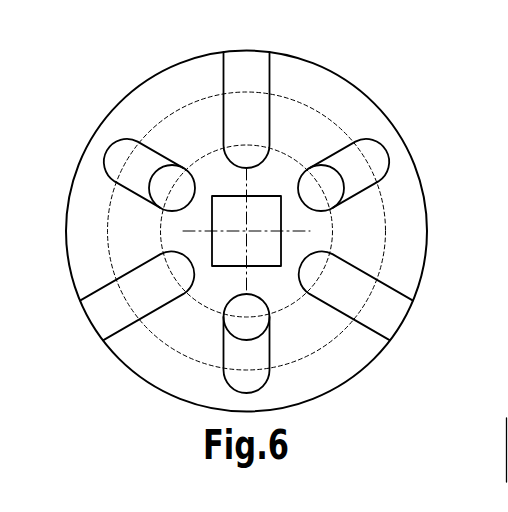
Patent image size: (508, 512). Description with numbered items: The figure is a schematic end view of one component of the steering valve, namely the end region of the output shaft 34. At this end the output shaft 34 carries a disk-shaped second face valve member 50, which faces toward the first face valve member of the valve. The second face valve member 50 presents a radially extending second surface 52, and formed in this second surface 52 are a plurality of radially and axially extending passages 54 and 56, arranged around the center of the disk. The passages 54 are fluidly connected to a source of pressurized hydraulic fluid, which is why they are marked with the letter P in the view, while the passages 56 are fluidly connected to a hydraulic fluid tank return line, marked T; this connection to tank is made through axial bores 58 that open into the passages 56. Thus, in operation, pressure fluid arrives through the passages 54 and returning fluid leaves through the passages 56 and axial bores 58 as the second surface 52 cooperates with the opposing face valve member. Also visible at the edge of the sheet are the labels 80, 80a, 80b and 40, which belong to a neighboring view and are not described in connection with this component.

The output shaft 34 is at (436, 166).
The second face valve member 50 is at (317, 75).
The second surface 52 is at (182, 87).
The passages 54 is at (258, 57).
The passages 56 is at (379, 152).
The axial bores 58 is at (337, 200).
The element 80 (adjacent figure) 80 is at (496, 302).
The element 80a (adjacent figure) 80a is at (507, 403).
The element 80b (adjacent figure) 80b is at (507, 497).
The element 40 (adjacent figure) 40 is at (507, 443).